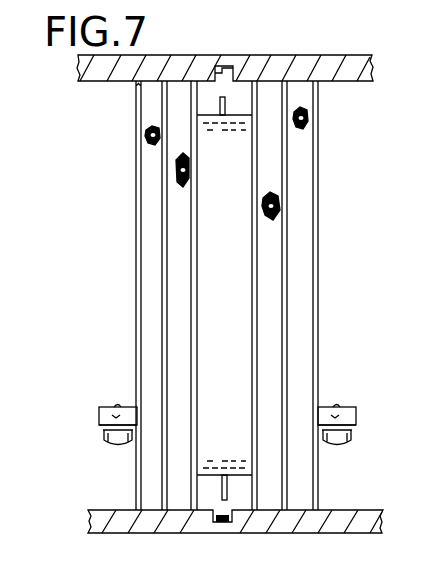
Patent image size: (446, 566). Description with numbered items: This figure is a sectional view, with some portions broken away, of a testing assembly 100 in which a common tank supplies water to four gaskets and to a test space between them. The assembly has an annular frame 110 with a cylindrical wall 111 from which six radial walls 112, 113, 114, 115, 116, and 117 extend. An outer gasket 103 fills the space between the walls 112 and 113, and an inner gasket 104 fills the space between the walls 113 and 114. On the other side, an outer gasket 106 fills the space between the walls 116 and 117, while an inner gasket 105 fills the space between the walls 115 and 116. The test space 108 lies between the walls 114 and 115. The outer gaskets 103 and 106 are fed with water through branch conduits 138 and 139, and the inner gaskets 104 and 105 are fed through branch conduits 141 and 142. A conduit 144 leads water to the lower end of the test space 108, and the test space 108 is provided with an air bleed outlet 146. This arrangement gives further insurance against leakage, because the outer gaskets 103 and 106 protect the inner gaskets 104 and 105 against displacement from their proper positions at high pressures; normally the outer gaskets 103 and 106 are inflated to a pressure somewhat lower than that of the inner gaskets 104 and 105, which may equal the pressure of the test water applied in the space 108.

The testing assembly 100 is at (322, 340).
The outer gasket 103 is at (153, 154).
The inner gasket 104 is at (183, 240).
The inner gasket 105 is at (275, 233).
The outer gasket 106 is at (303, 158).
The test space 108 is at (240, 482).
The annular frame 110 is at (135, 344).
The cylindrical wall 111 is at (238, 339).
The radial wall 112 is at (135, 103).
The radial wall 113 is at (167, 215).
The radial wall 114 is at (198, 244).
The radial wall 115 is at (253, 272).
The radial wall 116 is at (288, 260).
The radial wall 117 is at (320, 105).
The branch conduit 138 is at (146, 134).
The branch conduit 139 is at (308, 121).
The branch conduit 141 is at (176, 175).
The branch conduit 142 is at (280, 205).
The conduit 144 is at (224, 482).
The air bleed outlet 146 is at (225, 98).